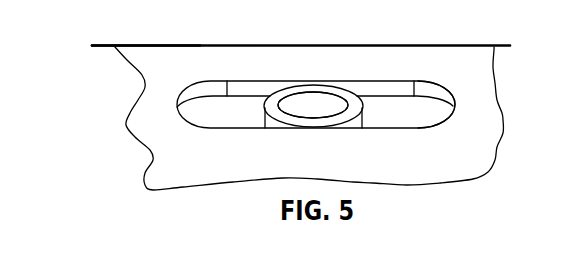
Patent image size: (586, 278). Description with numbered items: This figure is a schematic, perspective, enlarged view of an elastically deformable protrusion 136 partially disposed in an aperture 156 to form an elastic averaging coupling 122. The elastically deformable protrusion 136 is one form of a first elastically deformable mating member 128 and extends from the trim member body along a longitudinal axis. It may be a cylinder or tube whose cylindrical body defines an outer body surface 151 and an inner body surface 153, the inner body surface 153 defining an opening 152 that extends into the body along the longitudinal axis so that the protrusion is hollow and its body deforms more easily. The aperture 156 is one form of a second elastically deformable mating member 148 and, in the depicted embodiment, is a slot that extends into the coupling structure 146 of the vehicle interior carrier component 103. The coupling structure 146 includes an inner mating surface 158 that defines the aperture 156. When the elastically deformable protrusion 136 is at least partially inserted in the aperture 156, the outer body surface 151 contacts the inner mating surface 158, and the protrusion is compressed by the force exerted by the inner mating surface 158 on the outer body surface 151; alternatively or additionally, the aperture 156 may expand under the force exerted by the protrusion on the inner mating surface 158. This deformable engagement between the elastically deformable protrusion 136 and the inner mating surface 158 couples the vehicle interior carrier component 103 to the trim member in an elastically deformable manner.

The vehicle interior carrier component 103 is at (452, 44).
The coupling structure 146 is at (140, 44).
The elastic averaging coupling 122 is at (397, 67).
The first elastically deformable mating member 128 is at (276, 89).
The inner body surface 153 is at (285, 100).
The opening 152 is at (338, 100).
The elastically deformable protrusion 136 is at (270, 122).
The outer body surface 151 is at (356, 121).
The aperture 156 is at (238, 88).
The inner mating surface 158 is at (395, 90).
The second elastically deformable mating member 148 is at (427, 112).